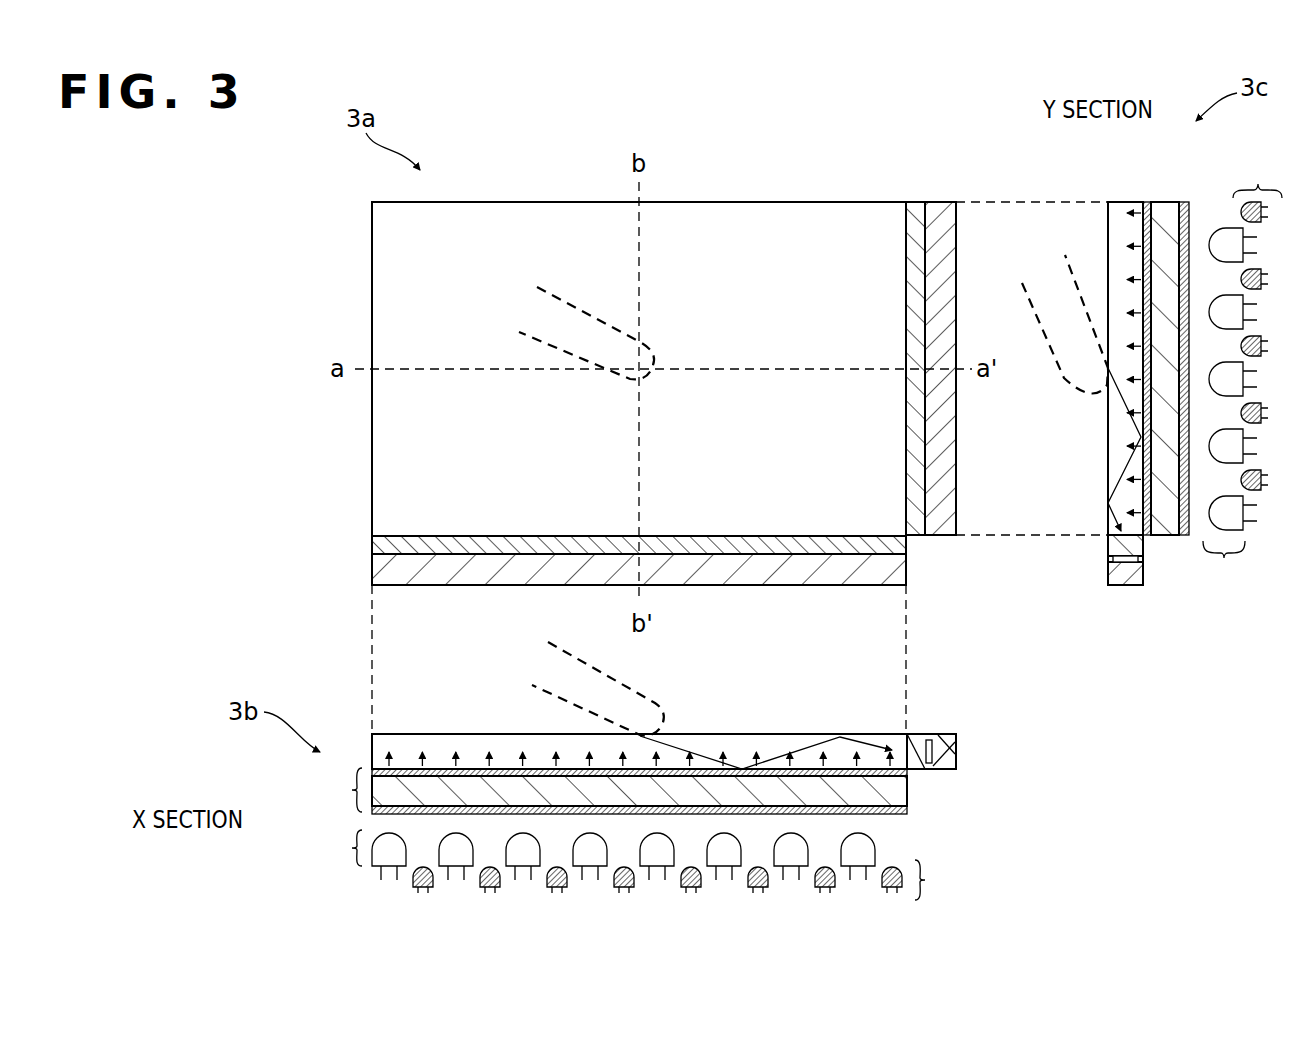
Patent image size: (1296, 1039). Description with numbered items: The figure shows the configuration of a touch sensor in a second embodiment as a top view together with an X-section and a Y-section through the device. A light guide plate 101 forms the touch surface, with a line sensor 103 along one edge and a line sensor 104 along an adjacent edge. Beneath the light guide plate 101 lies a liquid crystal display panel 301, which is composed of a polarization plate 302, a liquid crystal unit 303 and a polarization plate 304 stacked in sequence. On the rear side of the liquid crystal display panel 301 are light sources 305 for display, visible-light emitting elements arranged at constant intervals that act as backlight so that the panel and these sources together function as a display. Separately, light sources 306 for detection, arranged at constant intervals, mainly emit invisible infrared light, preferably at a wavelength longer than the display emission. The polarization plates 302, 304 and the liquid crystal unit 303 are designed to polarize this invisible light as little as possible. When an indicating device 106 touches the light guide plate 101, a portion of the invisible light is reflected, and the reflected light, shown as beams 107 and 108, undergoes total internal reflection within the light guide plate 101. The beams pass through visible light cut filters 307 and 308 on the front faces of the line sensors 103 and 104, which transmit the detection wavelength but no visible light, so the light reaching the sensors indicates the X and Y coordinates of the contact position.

The light guide plate 101 is at (449, 734).
The line sensor 103 is at (372, 572).
The line sensor 104 is at (940, 202).
The indicating device 106 is at (620, 670).
The beam 107 is at (708, 760).
The beam 108 is at (1108, 412).
The liquid crystal display panel 301 is at (350, 790).
The polarization plate 302 is at (907, 772).
The liquid crystal unit 303 is at (907, 790).
The polarization plate 304 is at (907, 810).
The light sources for display 305 is at (350, 848).
The light sources for detection 306 is at (930, 880).
The visible light cut filter 307 is at (1108, 549).
The visible light cut filter 308 is at (921, 738).